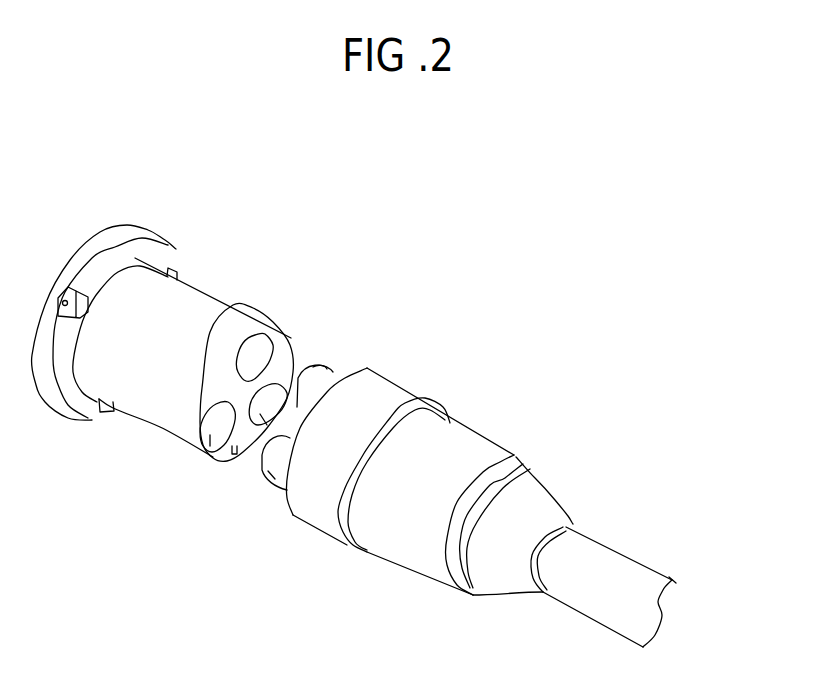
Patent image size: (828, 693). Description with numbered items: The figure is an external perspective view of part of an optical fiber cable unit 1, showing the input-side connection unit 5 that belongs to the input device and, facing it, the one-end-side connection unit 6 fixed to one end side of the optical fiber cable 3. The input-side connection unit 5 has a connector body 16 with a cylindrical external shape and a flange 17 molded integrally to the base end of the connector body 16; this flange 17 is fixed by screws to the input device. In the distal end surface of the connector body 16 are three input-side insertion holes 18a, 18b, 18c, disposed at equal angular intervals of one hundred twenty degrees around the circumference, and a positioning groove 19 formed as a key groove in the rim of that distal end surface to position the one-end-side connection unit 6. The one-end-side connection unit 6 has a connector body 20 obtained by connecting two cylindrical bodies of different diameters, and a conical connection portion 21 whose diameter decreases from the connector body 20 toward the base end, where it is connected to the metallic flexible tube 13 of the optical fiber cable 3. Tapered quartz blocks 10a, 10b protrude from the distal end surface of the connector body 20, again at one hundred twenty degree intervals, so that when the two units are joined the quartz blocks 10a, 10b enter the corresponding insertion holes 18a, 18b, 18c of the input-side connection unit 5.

The optical fiber cable unit 1 is at (450, 243).
The optical fiber cable 3 is at (611, 549).
The input-side connection unit 5 is at (214, 296).
The one-end-side connection unit 6 is at (479, 434).
The quartz block 10a is at (327, 368).
The quartz block 10b is at (268, 462).
The metallic flexible tube 13 is at (664, 573).
The connector body 16 is at (243, 337).
The flange 17 is at (131, 228).
The input-side insertion hole 18a is at (257, 355).
The input-side insertion hole 18b is at (212, 436).
The input-side insertion hole 18c is at (262, 432).
The positioning groove 19 is at (234, 452).
The connector body 20 is at (519, 466).
The conical connection portion 21 is at (547, 500).